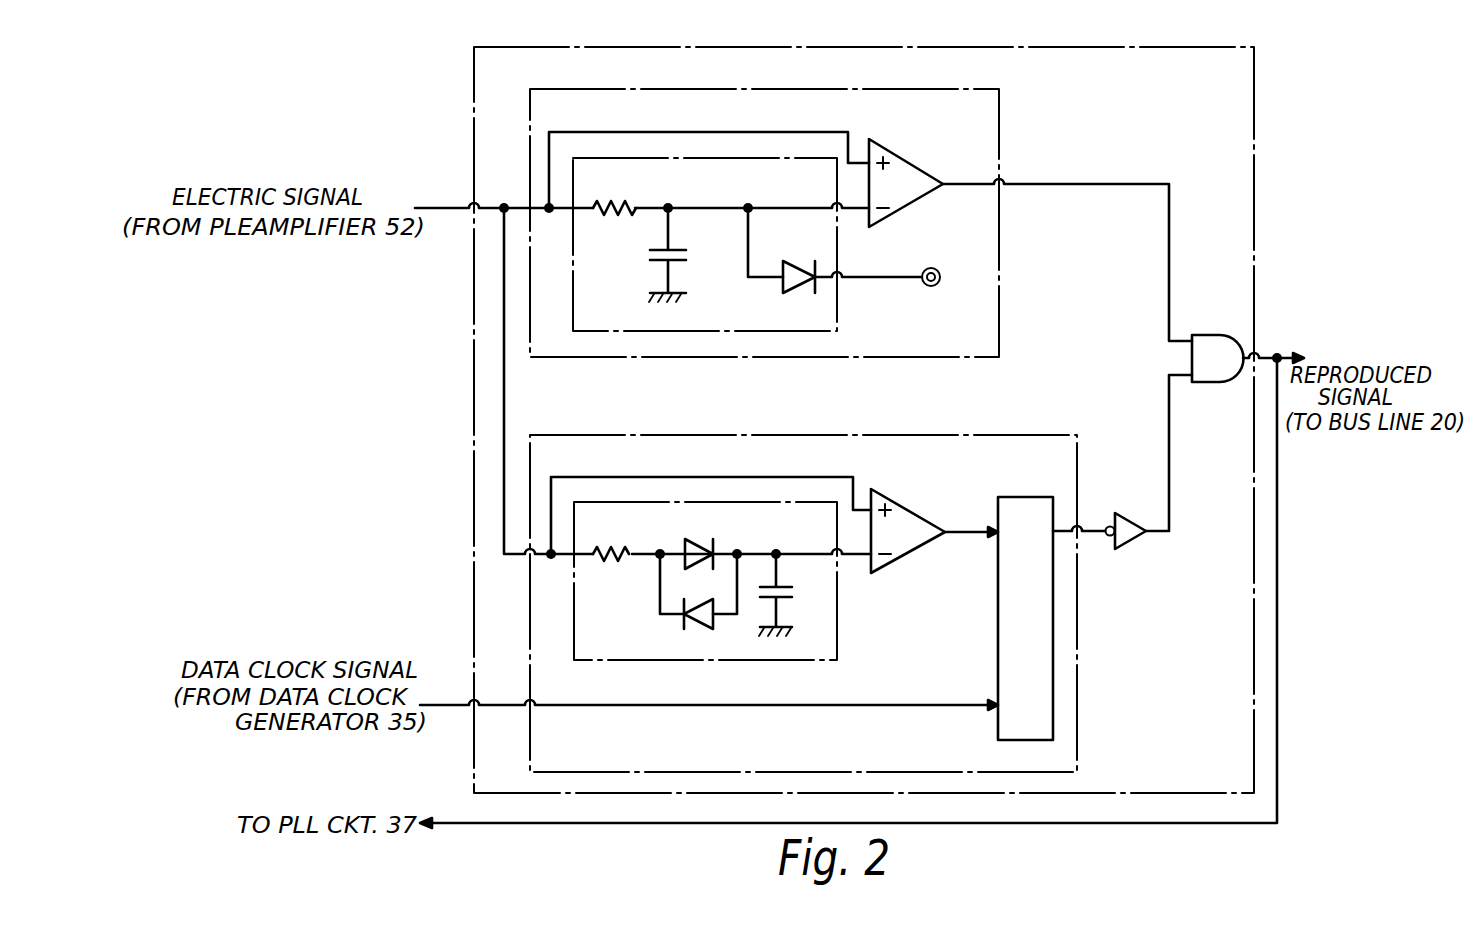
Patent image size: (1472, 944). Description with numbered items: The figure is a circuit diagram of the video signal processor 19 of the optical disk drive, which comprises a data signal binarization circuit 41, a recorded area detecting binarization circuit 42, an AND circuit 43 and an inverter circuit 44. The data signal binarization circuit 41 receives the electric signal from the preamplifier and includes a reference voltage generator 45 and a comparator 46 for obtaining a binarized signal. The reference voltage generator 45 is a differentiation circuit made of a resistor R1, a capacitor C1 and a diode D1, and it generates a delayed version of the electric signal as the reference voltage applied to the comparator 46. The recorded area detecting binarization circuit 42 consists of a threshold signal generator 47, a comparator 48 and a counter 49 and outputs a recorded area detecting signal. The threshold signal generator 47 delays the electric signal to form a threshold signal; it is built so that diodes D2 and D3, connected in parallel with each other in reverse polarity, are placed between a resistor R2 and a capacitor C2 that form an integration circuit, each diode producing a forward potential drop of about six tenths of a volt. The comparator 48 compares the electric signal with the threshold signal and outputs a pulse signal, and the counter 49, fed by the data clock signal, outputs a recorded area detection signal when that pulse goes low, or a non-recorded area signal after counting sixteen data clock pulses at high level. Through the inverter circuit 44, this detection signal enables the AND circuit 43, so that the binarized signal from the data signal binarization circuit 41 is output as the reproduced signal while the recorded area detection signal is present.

The video signal processor 19 is at (474, 95).
The data signal binarization circuit 41 is at (999, 295).
The recorded area detecting binarization circuit 42 is at (968, 433).
The AND circuit 43 is at (1205, 342).
The inverter circuit 44 is at (1128, 515).
The reference voltage generator 45 is at (658, 158).
The comparator 46 is at (915, 166).
The threshold signal generator 47 is at (840, 630).
The comparator 48 is at (922, 518).
The counter 49 is at (1036, 497).
The resistor R1 is at (625, 216).
The capacitor C1 is at (652, 262).
The diode D1 is at (786, 288).
The resistor R2 is at (616, 562).
The diode D2 is at (697, 538).
The diode D3 is at (697, 628).
The capacitor C2 is at (790, 600).